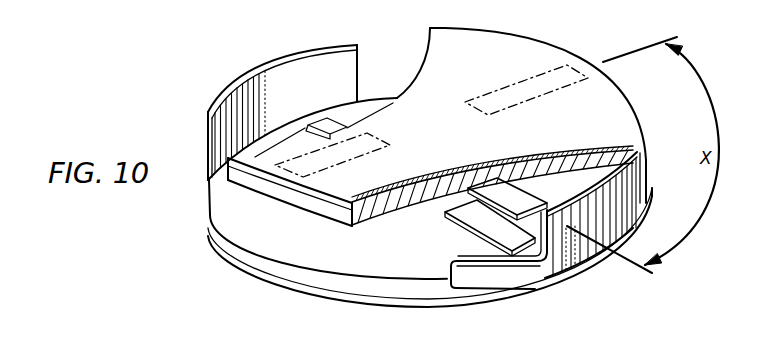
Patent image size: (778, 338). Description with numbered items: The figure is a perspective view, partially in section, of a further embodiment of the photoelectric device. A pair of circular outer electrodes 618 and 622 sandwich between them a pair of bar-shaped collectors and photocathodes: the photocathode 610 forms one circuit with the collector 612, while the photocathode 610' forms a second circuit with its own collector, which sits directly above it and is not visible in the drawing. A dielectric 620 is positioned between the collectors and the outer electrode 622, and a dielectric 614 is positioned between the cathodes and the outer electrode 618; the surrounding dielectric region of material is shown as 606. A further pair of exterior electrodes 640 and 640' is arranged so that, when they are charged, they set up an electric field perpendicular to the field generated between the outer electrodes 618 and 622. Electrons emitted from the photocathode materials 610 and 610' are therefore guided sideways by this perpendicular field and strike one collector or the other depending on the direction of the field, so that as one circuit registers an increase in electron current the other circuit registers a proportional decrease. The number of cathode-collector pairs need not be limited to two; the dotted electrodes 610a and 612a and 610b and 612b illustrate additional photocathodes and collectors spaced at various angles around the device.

The dielectric region of material 606 is at (243, 202).
The photocathode 610 is at (473, 228).
The photocathode 610' is at (326, 113).
The collector 612 is at (515, 188).
The dotted electrode (photocathode) 610a is at (368, 134).
The dotted electrode (collector) 612a is at (378, 155).
The dotted electrode (photocathode) 610b is at (546, 71).
The dotted electrode (collector) 612b is at (529, 63).
The dielectric 614 is at (258, 254).
The outer electrode 618 is at (297, 284).
The dielectric 620 is at (361, 219).
The outer electrode 622 is at (430, 42).
The exterior electrode 640 is at (612, 215).
The exterior electrode 640' is at (266, 112).